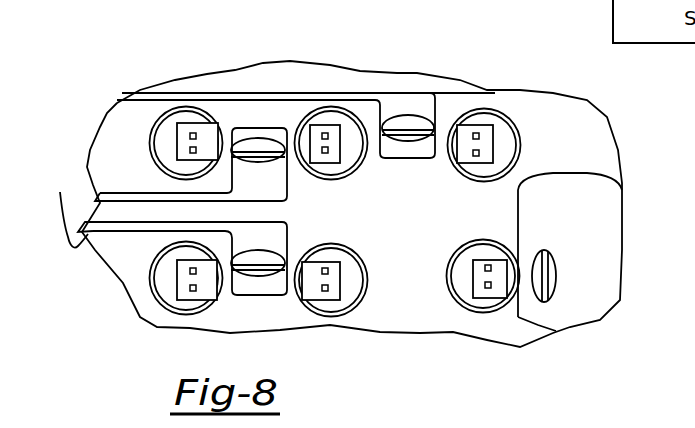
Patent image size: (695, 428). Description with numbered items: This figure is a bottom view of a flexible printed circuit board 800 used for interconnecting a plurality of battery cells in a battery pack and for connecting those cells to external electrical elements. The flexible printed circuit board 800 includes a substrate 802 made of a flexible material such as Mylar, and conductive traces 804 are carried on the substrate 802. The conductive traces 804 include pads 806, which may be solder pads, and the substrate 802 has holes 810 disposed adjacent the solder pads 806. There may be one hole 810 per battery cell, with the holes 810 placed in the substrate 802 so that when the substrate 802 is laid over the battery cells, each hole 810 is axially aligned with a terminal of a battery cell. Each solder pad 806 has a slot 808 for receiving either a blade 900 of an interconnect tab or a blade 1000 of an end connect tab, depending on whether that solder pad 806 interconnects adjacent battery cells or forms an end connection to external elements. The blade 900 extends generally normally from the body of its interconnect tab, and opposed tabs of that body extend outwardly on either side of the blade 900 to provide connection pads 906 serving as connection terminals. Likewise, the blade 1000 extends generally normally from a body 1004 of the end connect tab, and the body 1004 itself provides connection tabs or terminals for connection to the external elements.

The flexible printed circuit board 800 is at (484, 72).
The substrate 802 is at (394, 204).
The conductive traces 804 is at (118, 103).
The pads 806 is at (425, 107).
The slot 808 is at (403, 118).
The holes 810 is at (167, 140).
The blade 900 is at (262, 152).
The connection pads 906 is at (186, 140).
The blade 1000 is at (416, 130).
The body 1004 is at (483, 148).